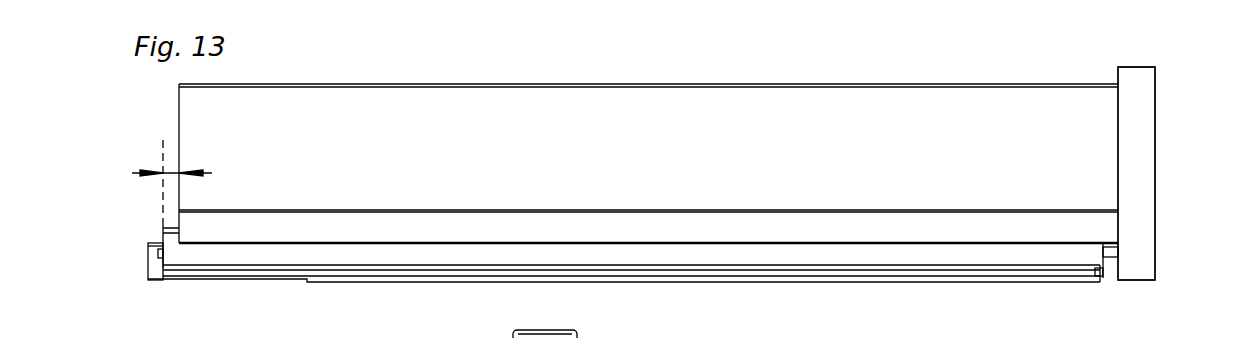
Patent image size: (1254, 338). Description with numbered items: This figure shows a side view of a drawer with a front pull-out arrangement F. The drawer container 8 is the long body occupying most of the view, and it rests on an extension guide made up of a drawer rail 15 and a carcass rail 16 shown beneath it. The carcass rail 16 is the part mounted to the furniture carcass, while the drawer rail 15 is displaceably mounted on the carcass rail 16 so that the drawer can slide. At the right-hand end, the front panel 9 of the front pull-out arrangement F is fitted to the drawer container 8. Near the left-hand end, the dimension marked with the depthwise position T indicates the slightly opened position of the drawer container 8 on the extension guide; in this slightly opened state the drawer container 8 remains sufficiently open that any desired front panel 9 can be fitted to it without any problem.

The drawer container 8 is at (666, 128).
The front panel 9 is at (1133, 153).
The front pull-out arrangement F is at (1137, 222).
The depthwise position T is at (173, 173).
The drawer rail 15 is at (173, 245).
The carcass rail 16 is at (157, 265).